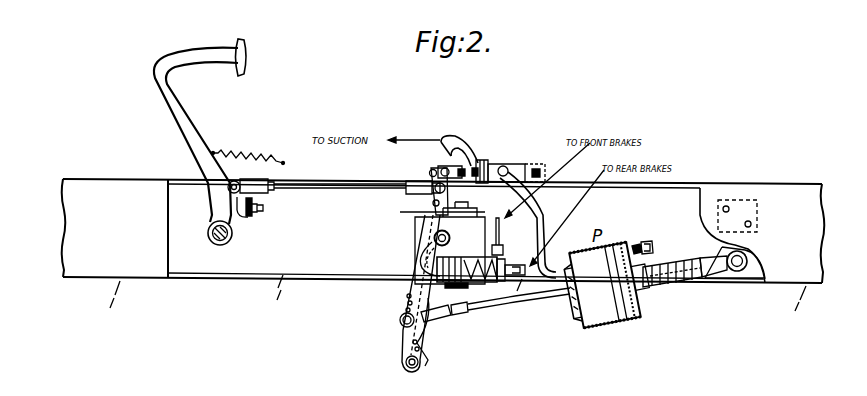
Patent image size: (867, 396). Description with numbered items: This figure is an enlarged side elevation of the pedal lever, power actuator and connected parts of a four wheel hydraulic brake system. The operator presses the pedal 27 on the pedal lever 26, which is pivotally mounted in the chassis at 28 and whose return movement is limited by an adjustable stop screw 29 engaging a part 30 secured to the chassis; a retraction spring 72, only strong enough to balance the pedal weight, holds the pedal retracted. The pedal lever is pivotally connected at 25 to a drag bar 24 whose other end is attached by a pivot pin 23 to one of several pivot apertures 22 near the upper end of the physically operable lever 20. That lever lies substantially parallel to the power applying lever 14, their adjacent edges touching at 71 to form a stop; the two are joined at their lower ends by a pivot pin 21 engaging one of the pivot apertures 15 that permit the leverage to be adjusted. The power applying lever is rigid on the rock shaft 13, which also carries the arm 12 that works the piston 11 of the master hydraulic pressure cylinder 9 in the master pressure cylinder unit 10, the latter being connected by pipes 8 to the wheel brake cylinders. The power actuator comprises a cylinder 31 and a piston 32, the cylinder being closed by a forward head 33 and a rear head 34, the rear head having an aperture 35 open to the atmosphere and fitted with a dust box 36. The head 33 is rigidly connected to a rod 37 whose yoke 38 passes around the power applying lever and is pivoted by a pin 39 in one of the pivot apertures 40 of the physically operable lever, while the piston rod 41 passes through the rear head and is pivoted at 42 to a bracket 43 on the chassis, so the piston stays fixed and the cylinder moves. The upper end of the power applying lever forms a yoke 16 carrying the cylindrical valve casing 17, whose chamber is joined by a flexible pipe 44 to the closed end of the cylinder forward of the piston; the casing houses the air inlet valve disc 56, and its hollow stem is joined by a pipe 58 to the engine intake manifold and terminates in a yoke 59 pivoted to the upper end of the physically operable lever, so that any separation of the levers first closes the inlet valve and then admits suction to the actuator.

The pipes 8 is at (514, 263).
The master hydraulic pressure cylinder 9 is at (499, 258).
The master pressure cylinder unit 10 is at (450, 243).
The piston 11 is at (432, 300).
The arm 12 is at (428, 265).
The rock shaft 13 is at (434, 237).
The power applying lever 14 is at (437, 308).
The pivot apertures 15 is at (428, 356).
The yoke 16 is at (489, 168).
The valve casing 17 is at (526, 165).
The physically operable lever 20 is at (406, 296).
The pivot pin 21 is at (412, 369).
The pivot apertures 22 is at (432, 204).
The pivot pin 23 is at (428, 183).
The drag bar 24 is at (322, 184).
The pivotal connection 25 is at (228, 184).
The pedal lever 26 is at (194, 144).
The pedal 27 is at (245, 57).
The pivotal mounting 28 is at (217, 242).
The adjustable stop screw 29 is at (250, 220).
The part 30 is at (255, 202).
The cylinder 31 is at (600, 327).
The piston 32 is at (622, 320).
The cylinder head 33 is at (576, 314).
The cylinder head 34 is at (641, 314).
The aperture 35 is at (640, 246).
The dust box 36 is at (653, 247).
The rod 37 is at (542, 298).
The yoke 38 is at (430, 326).
The pivot pin 39 is at (400, 322).
The pivot apertures 40 is at (406, 310).
The piston rod 41 is at (645, 322).
The pivotal connection 42 is at (741, 272).
The bracket 43 is at (755, 282).
The flexible pipe 44 is at (547, 211).
The air inlet valve disc 56 is at (541, 171).
The pipe 58 is at (463, 146).
The yoke 59 is at (445, 167).
The contact of adjacent lever edges 71 is at (400, 212).
The retraction spring 72 is at (255, 151).